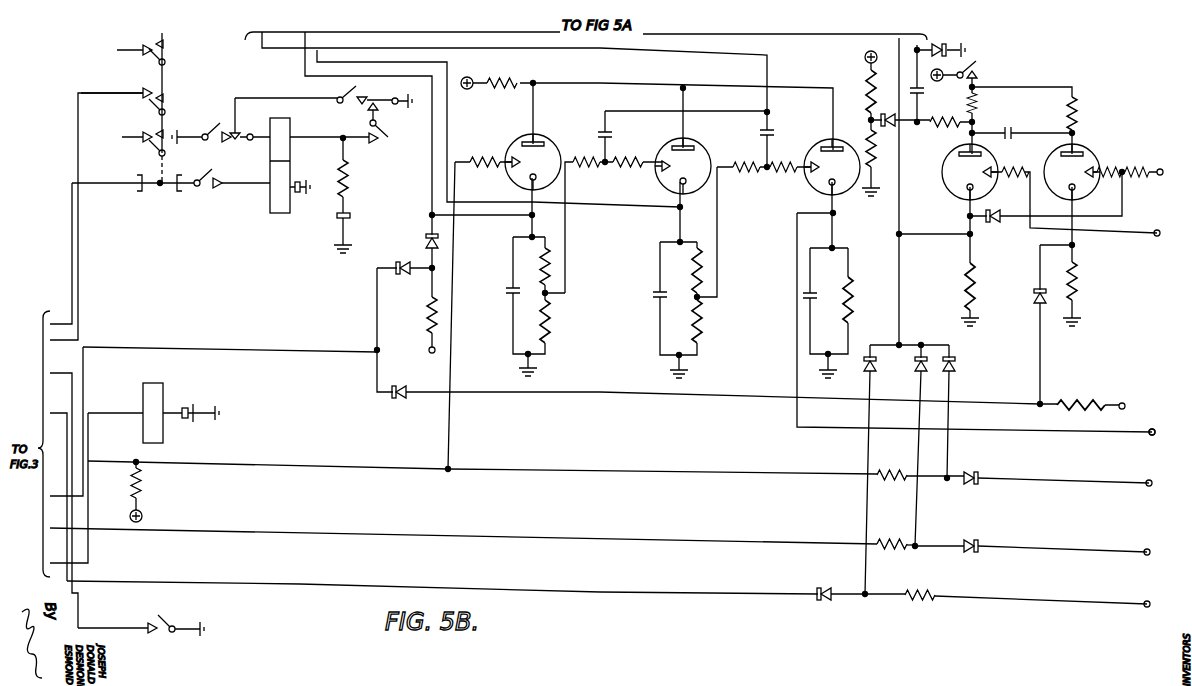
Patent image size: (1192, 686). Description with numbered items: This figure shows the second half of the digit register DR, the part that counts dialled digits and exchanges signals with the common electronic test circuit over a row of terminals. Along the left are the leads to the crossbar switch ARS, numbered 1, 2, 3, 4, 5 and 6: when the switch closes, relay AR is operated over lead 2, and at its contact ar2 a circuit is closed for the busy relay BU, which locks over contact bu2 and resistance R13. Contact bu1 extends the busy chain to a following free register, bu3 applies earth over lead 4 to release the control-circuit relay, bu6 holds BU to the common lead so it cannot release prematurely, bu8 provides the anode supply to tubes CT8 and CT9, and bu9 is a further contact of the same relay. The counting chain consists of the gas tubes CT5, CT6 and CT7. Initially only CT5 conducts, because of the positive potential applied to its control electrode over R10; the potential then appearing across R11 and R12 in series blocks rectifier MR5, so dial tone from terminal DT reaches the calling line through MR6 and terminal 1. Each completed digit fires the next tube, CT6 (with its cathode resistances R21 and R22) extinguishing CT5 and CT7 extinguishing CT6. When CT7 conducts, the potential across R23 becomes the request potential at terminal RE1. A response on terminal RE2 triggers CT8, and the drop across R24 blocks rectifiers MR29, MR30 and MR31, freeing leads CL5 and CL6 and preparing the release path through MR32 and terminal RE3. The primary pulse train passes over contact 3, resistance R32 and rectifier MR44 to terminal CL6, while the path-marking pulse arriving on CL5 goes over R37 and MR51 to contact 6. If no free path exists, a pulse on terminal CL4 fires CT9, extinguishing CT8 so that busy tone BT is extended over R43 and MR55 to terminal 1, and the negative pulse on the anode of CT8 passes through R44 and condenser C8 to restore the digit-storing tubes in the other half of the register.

The terminal 1 of switch ARS 1 is at (230, 341).
The lead 2 is at (115, 402).
The contact 3 of switch ARS 3 is at (463, 528).
The lead 4 of switch ARS 4 is at (113, 620).
The terminal 5 of switch ARS 5 is at (482, 459).
The contact 6 of switch ARS 6 is at (442, 579).
The contact bu1 is at (141, 108).
The contact bu2 is at (222, 121).
The contact bu3 is at (176, 618).
The contact bu6 is at (171, 191).
The contact bu8 is at (985, 68).
The contact bu9 is at (359, 123).
The contact ar2 is at (323, 93).
The busy relay BU is at (287, 183).
The relay AR is at (181, 423).
The resistance R10 is at (155, 491).
The resistance R11 is at (554, 266).
The resistance R12 is at (551, 334).
The resistance R13 is at (360, 195).
The resistance R21 is at (705, 268).
The resistance R22 is at (706, 272).
The resistance R23 is at (850, 280).
The resistance R24 is at (988, 256).
The resistance R32 is at (897, 559).
The resistance R37 is at (904, 611).
The resistance R43 is at (1079, 393).
The resistance R44 is at (943, 134).
The condenser C8 is at (959, 116).
The gas tube CT5 is at (543, 156).
The gas tube CT6 is at (689, 160).
The gas tube CT7 is at (836, 163).
The gas tube CT8 is at (985, 172).
The gas tube CT9 is at (1086, 172).
The rectifier MR5 is at (443, 245).
The rectifier MR6 is at (404, 255).
The rectifier MR29 is at (863, 363).
The rectifier MR30 is at (945, 334).
The rectifier MR31 is at (956, 365).
The rectifier MR32 is at (937, 492).
The rectifier MR44 is at (946, 559).
The rectifier MR51 is at (828, 609).
The rectifier MR55 is at (708, 346).
The dial tone terminal DT is at (424, 319).
The terminal CL4 is at (1139, 142).
The terminal RE2 is at (1081, 219).
The busy tone terminal BT is at (1144, 403).
The terminal RE1 is at (1162, 398).
The terminal RE3 is at (1164, 500).
The terminal CL6 is at (1155, 626).
The terminal CL5 is at (1043, 621).